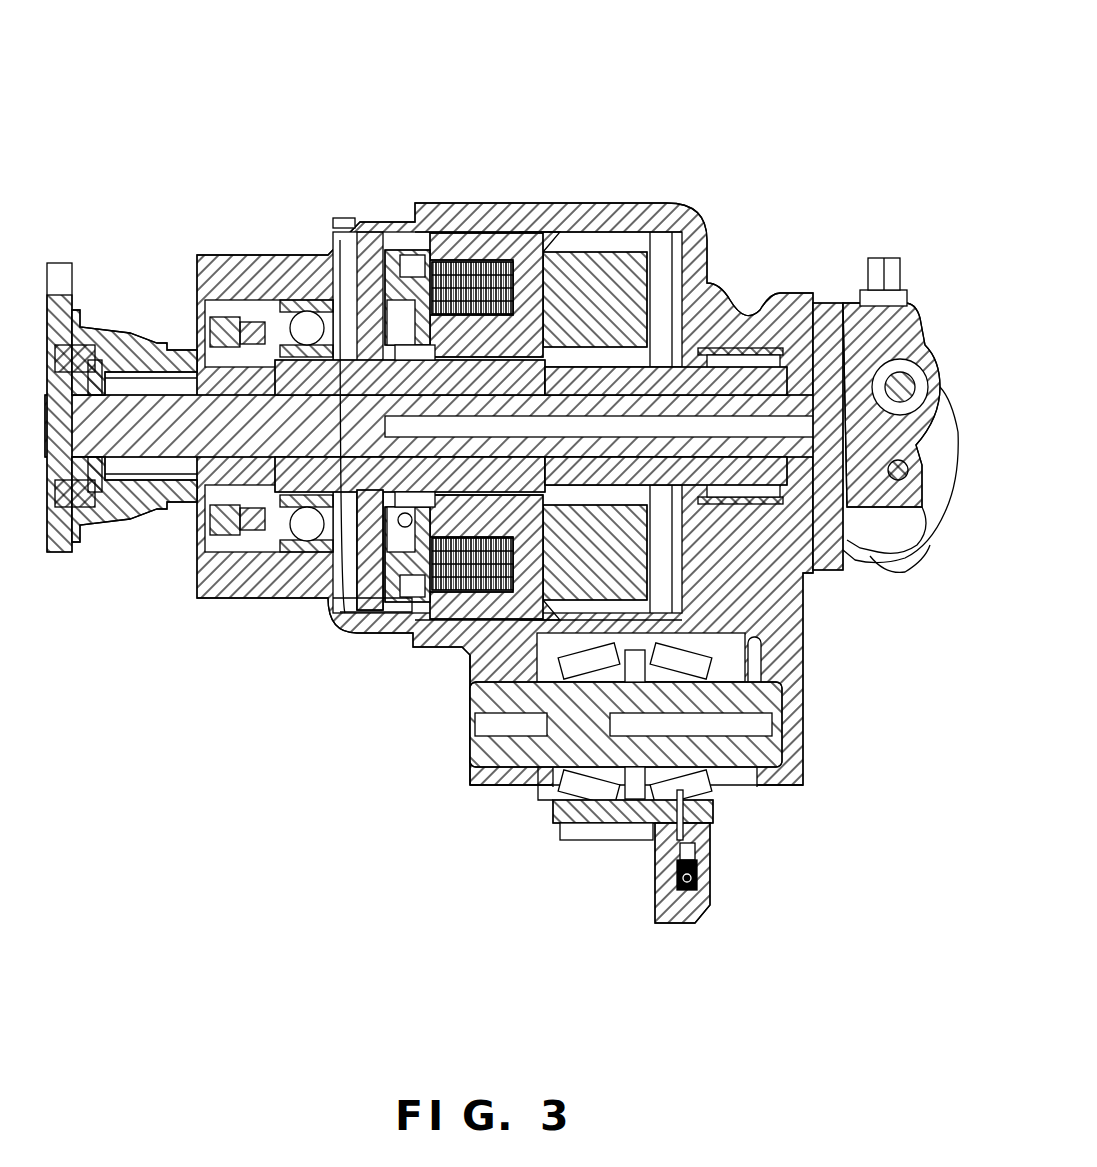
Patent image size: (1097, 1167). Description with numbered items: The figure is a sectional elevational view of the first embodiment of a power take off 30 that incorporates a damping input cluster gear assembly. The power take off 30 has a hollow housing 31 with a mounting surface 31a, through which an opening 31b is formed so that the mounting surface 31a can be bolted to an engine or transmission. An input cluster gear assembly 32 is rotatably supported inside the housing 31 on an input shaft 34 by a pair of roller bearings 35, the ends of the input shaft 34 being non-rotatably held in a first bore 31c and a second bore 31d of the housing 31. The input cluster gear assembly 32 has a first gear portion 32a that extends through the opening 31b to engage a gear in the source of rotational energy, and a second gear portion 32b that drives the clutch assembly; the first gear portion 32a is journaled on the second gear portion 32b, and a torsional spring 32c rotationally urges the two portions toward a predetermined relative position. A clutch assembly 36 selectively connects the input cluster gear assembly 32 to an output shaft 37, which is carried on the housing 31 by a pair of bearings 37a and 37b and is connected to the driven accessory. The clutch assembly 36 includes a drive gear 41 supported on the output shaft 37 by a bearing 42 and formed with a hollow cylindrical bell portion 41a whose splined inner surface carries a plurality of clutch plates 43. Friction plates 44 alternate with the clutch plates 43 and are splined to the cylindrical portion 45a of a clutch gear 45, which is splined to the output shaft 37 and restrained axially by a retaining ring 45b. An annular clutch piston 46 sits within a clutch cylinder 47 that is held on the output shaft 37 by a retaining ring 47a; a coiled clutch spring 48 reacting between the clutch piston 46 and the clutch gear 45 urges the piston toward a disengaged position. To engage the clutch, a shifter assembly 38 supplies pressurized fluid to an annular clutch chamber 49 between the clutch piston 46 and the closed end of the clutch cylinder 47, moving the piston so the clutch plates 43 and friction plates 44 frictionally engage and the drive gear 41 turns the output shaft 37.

The power take off 30 is at (758, 85).
The housing 31 is at (693, 220).
The mounting surface 31a is at (790, 787).
The opening 31b is at (552, 790).
The first bore 31c is at (488, 680).
The second bore 31d is at (742, 700).
The input cluster gear assembly 32 is at (750, 847).
The first gear portion 32a is at (672, 912).
The second gear portion 32b is at (617, 815).
The spring 32c is at (706, 885).
The input shaft 34 is at (757, 745).
The roller bearings 35 is at (575, 795).
The clutch assembly 36 is at (584, 230).
The output shaft 37 is at (145, 392).
The bearing 37a is at (300, 322).
The bearing 37b is at (740, 362).
The shifter assembly 38 is at (903, 238).
The drive gear 41 is at (624, 262).
The hollow cylindrical bell portion 41a is at (542, 244).
The bearing 42 is at (598, 370).
The clutch plates 43 is at (503, 300).
The friction plates 44 is at (466, 262).
The clutch gear 45 is at (528, 520).
The cylindrical portion 45a is at (420, 530).
The retaining ring 45b is at (532, 372).
The clutch piston 46 is at (395, 555).
The clutch cylinder 47 is at (342, 218).
The retaining ring 47a is at (352, 350).
The clutch spring 48 is at (365, 295).
The clutch chamber 49 is at (362, 540).